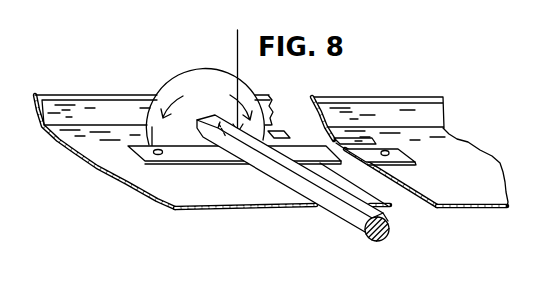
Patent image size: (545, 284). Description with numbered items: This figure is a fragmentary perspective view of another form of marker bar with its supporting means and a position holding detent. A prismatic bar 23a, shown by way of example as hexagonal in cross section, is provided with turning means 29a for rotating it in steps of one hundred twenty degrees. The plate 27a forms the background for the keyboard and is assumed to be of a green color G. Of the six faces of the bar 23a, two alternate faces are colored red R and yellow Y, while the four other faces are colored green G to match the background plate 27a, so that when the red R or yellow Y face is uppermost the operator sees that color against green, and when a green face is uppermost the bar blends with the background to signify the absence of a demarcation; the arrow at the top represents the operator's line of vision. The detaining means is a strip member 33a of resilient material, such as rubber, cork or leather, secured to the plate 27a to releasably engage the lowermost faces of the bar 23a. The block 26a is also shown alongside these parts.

The prismatic bar 23a is at (277, 178).
The guide block 26a is at (133, 124).
The plate 27a is at (84, 139).
The turning means 29a is at (224, 105).
The strip member 33a is at (210, 158).
The green color G is at (216, 198).
The red face R is at (364, 236).
The yellow face Y is at (390, 236).